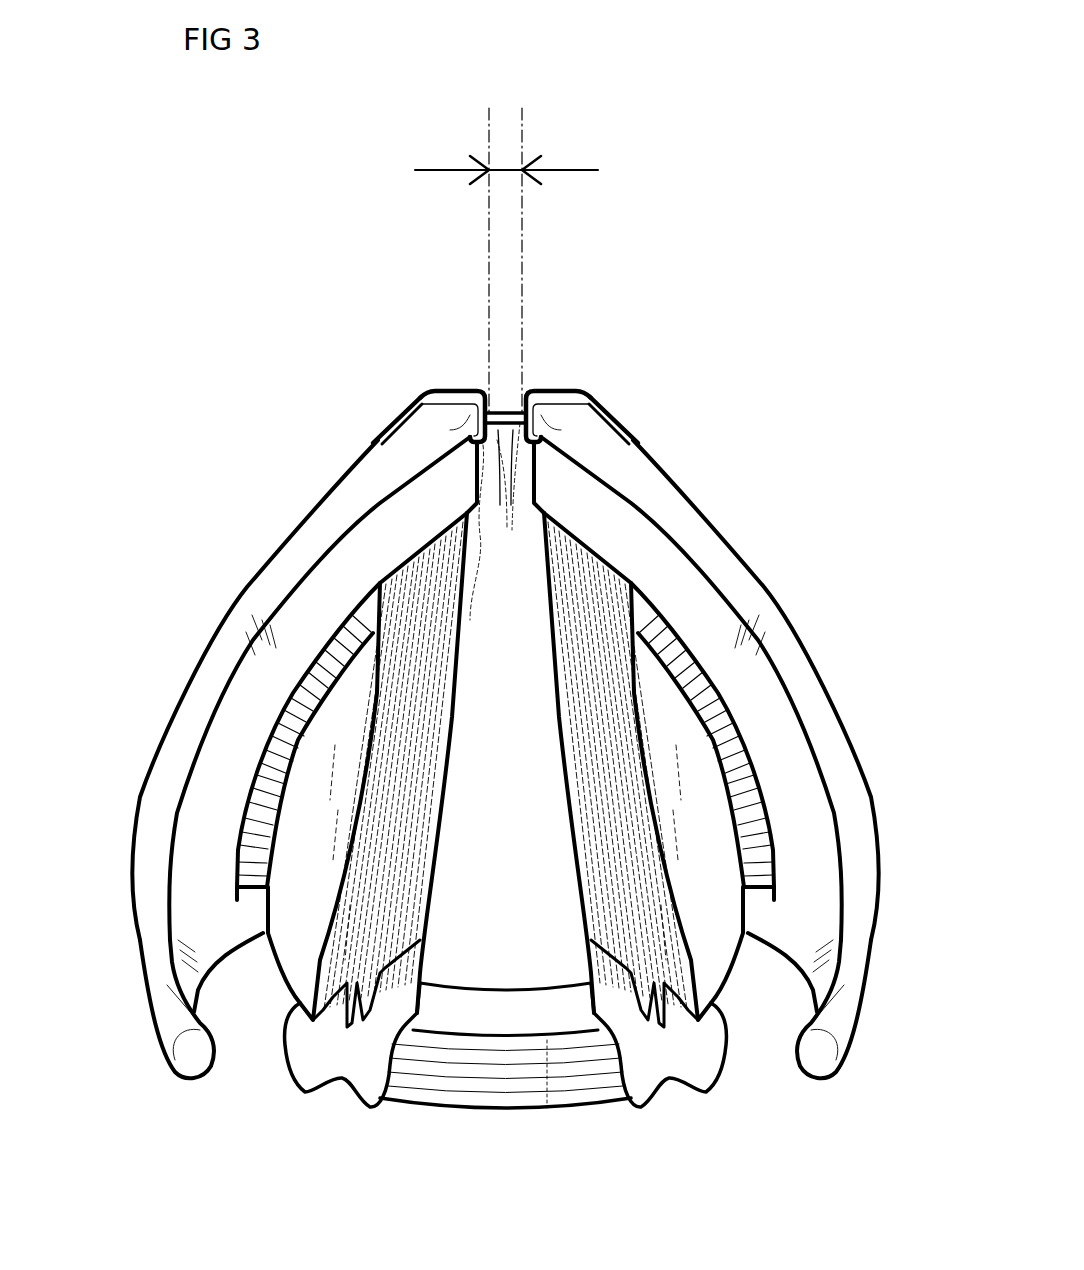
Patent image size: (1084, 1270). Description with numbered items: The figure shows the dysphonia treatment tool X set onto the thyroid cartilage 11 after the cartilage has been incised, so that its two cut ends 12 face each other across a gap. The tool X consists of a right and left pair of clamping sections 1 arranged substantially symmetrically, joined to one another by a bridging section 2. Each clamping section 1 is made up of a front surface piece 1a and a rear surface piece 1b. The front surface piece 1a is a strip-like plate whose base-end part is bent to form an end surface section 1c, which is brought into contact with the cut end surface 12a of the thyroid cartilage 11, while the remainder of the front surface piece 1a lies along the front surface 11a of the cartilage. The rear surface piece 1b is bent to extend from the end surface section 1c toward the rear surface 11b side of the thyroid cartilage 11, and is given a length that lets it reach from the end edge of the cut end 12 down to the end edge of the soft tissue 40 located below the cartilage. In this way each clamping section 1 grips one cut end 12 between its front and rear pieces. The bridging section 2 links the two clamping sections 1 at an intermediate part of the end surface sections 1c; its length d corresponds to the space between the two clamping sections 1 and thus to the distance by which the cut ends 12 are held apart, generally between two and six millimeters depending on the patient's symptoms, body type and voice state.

The clamping section 1 is at (178, 202).
The front surface piece 1a is at (393, 408).
The rear surface piece 1b is at (380, 430).
The end surface section 1c is at (417, 393).
The bridging section 2 is at (500, 505).
The thyroid cartilage 11 is at (491, 757).
The front surface 11a is at (342, 478).
The rear surface 11b is at (380, 540).
The cut end 12 is at (397, 410).
The cut end surface 12a is at (460, 407).
The soft tissue 40 is at (505, 510).
The dysphonia treatment tool X is at (587, 388).
The length of the bridging section d is at (472, 160).